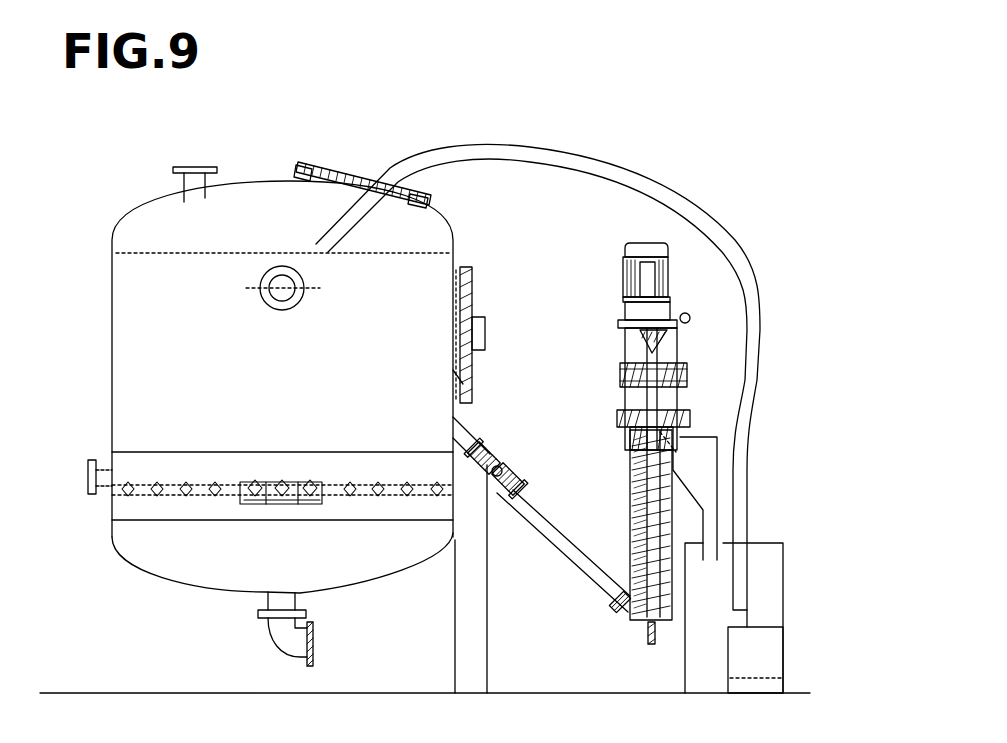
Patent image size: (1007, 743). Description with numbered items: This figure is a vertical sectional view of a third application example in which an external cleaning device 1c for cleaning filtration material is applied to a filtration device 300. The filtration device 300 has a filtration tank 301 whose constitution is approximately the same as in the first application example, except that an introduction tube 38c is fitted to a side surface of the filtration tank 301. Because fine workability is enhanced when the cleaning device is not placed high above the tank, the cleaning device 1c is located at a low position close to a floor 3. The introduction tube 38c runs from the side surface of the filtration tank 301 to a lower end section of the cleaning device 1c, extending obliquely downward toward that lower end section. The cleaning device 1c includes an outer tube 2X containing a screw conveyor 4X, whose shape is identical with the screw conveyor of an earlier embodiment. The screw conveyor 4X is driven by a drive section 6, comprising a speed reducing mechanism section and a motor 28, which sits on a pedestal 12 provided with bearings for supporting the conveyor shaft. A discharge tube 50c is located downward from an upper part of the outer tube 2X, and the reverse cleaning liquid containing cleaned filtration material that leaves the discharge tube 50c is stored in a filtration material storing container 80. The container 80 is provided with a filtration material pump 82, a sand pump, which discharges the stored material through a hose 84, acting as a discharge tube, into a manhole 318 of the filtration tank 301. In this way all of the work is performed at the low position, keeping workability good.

The floor 3 is at (555, 692).
The filtration device 300 is at (142, 182).
The filtration tank 301 is at (270, 181).
The manhole 318 is at (345, 172).
The hose 84 is at (740, 228).
The cleaning device 1c is at (644, 438).
The motor 28 is at (672, 270).
The drive section 6 is at (676, 290).
The pedestal 12 is at (620, 358).
The outer tube 2X is at (630, 525).
The screw conveyor 4X is at (635, 450).
The discharge tube 50c is at (705, 437).
The introduction tube 38c is at (542, 540).
The filtration material storing container 80 is at (745, 548).
The filtration material pump 82 is at (768, 655).